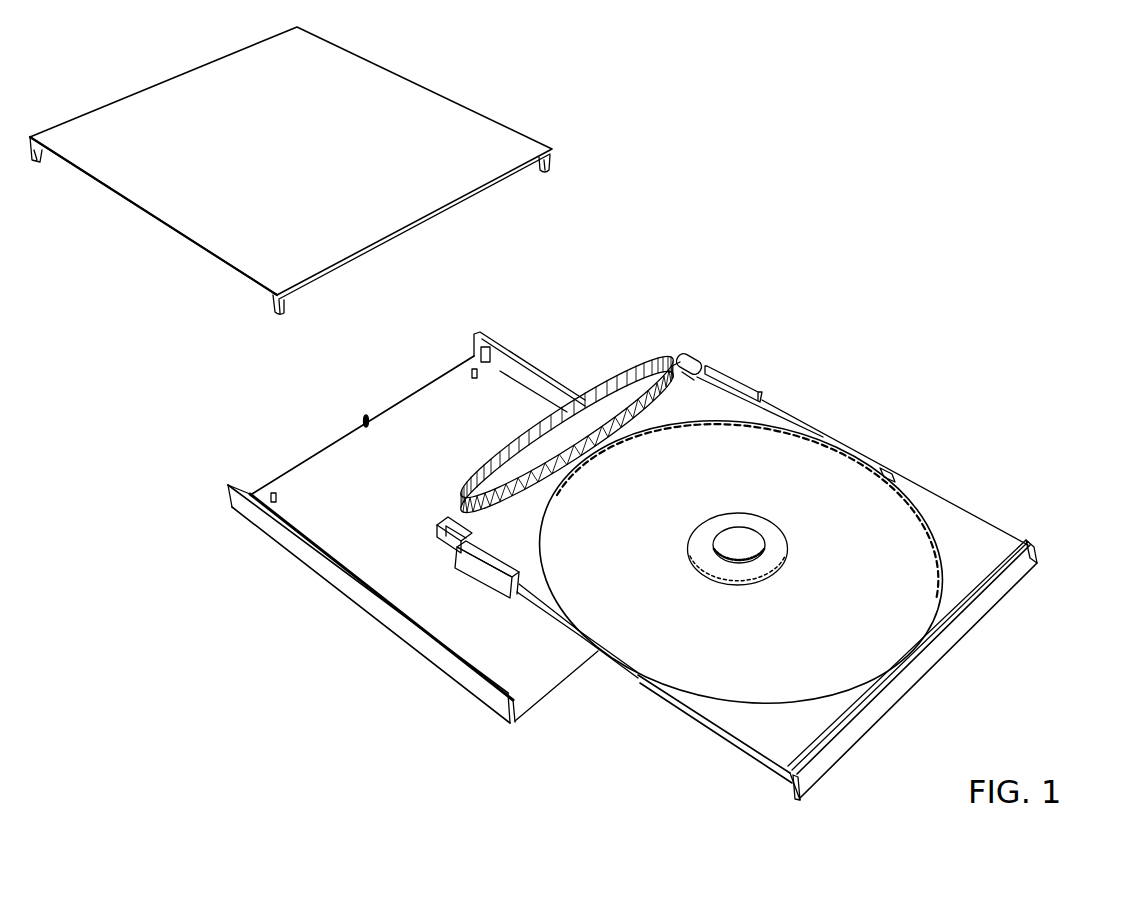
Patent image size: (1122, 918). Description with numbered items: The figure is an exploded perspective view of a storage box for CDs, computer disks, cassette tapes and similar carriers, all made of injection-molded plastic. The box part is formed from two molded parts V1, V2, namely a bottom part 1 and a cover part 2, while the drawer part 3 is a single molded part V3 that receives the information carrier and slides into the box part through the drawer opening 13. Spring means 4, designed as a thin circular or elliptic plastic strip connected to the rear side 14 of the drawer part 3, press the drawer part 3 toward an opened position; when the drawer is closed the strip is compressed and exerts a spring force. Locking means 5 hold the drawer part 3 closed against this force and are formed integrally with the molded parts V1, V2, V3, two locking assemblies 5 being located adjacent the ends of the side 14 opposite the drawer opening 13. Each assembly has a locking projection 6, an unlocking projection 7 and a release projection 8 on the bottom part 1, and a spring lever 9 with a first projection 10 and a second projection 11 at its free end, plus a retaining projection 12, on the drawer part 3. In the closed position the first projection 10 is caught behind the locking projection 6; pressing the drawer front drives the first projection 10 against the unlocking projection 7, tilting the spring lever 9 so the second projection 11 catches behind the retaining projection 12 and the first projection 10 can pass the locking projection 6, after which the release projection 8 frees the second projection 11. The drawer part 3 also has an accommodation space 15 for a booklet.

The bottom part 1 is at (390, 534).
The cover part 2 is at (281, 163).
The drawer part 3 is at (851, 633).
The spring means 4 is at (597, 405).
The locking means 5 is at (295, 495).
The locking projection 6 is at (488, 352).
The unlocking projection 7 is at (478, 355).
The release projection 8 is at (474, 372).
The spring lever 9 is at (700, 366).
The first projection 10 is at (688, 362).
The second projection 11 is at (677, 365).
The retaining projection 12 is at (684, 384).
The drawer opening 13 is at (565, 689).
The rear side 14 is at (495, 526).
The accommodation space 15 is at (795, 817).
The molded part V1 is at (335, 629).
The molded part V2 is at (463, 51).
The molded part V3 is at (887, 440).